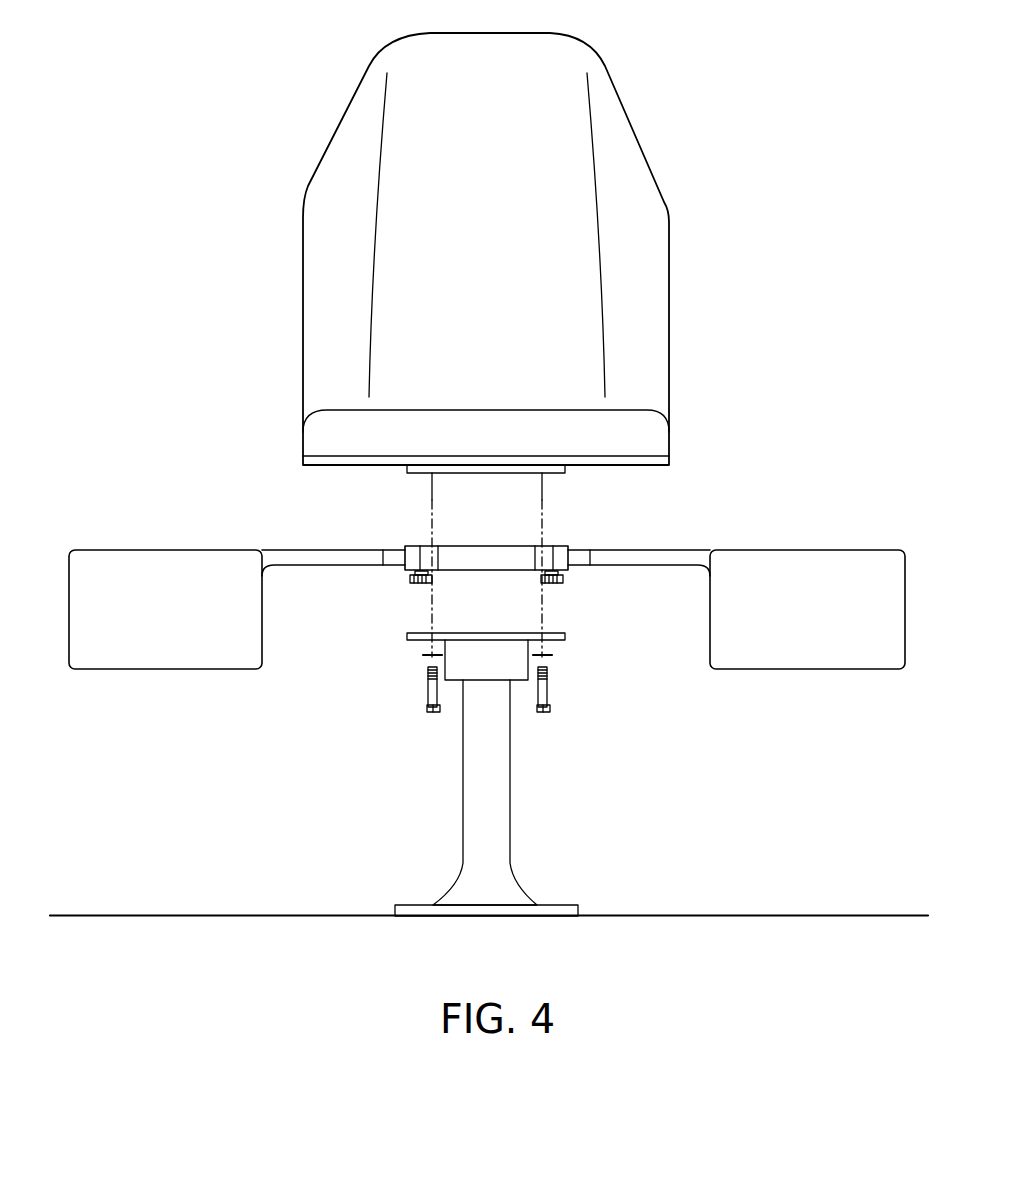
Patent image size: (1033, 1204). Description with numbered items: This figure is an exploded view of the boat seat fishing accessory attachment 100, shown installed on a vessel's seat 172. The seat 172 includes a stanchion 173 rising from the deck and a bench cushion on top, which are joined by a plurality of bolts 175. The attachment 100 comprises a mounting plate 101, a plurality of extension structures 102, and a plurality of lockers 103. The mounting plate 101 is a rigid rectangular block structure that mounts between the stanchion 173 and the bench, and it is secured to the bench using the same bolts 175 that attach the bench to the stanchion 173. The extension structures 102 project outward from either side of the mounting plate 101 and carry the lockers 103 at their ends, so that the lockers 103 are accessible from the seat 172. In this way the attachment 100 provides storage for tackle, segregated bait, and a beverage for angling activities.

The boat seat fishing accessory attachment 100 is at (205, 512).
The seat 172 is at (645, 150).
The mounting plate 101 is at (547, 544).
The extension structures 102 is at (325, 566).
The lockers 103 is at (175, 668).
The bolts 175 is at (434, 713).
The stanchion 173 is at (510, 817).